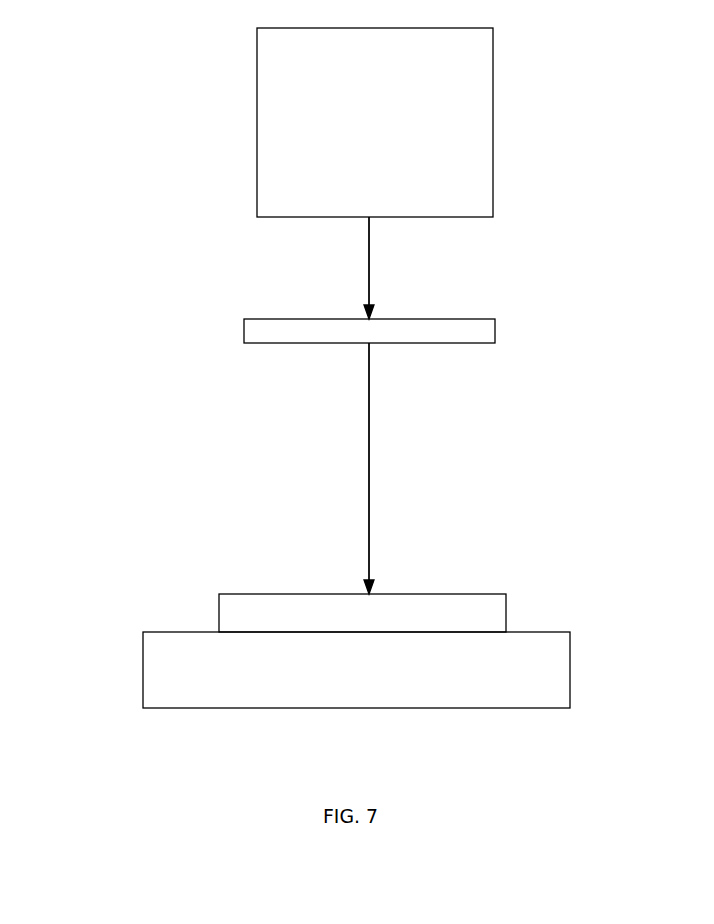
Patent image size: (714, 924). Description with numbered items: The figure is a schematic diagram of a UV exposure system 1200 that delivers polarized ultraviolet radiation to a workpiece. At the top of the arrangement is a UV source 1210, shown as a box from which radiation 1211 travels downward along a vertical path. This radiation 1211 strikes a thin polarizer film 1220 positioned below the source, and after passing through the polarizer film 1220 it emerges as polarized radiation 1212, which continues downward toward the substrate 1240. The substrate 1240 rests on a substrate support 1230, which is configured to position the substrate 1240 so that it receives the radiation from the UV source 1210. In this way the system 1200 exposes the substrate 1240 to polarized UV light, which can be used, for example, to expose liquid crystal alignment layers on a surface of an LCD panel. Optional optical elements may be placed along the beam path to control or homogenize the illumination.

The UV exposure system 1200 is at (108, 103).
The UV source 1210 is at (397, 136).
The radiation 1211 is at (370, 255).
The polarizer film 1220 is at (495, 332).
The polarized radiation 1212 is at (368, 490).
The substrate 1240 is at (507, 614).
The substrate support 1230 is at (379, 682).